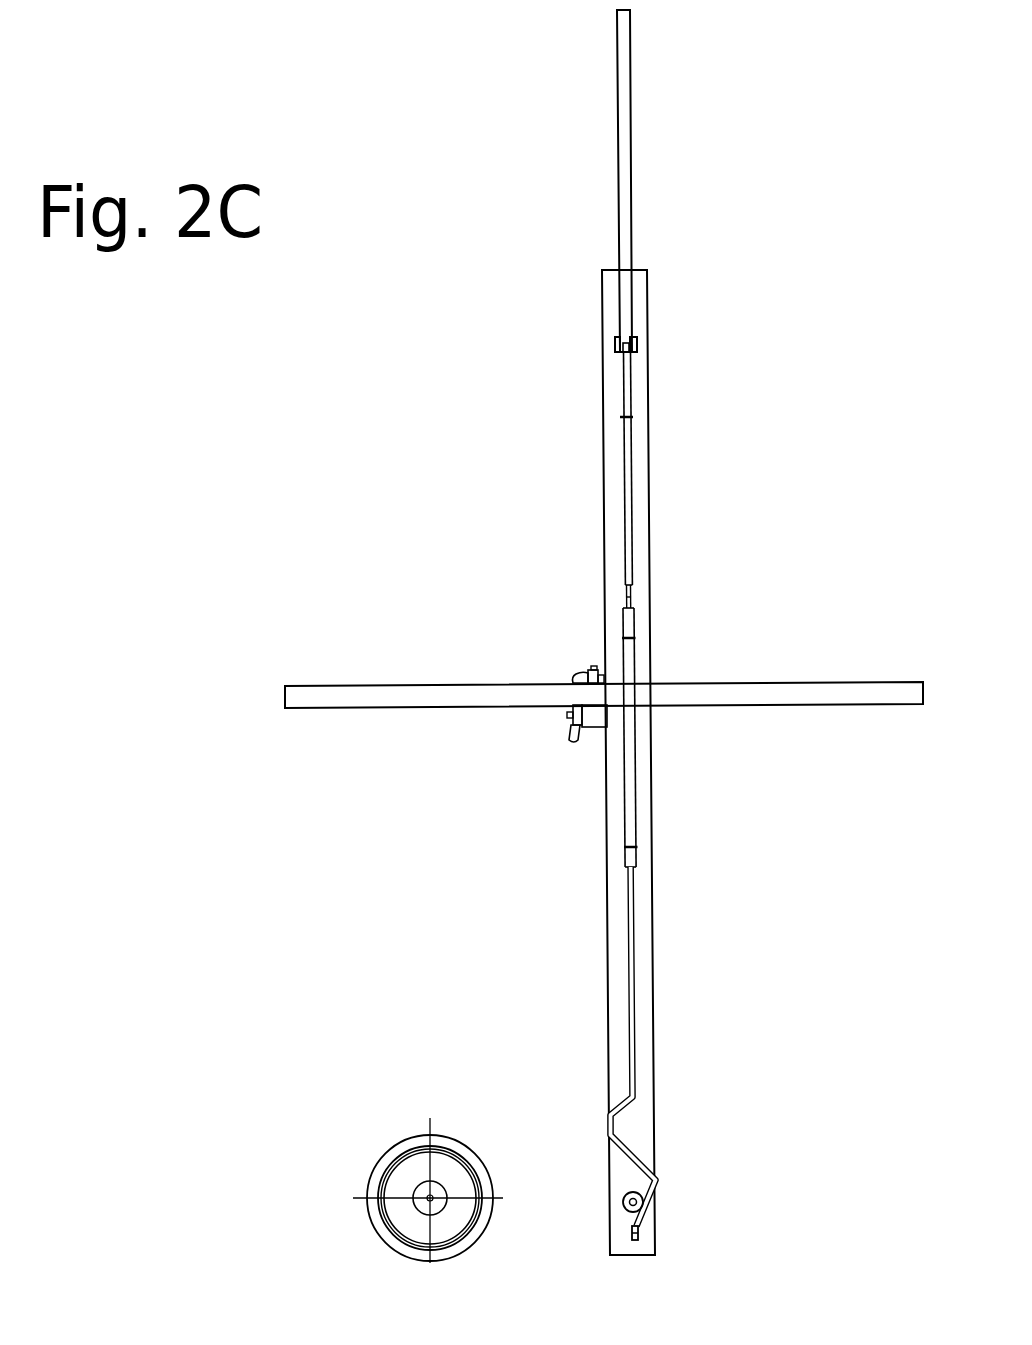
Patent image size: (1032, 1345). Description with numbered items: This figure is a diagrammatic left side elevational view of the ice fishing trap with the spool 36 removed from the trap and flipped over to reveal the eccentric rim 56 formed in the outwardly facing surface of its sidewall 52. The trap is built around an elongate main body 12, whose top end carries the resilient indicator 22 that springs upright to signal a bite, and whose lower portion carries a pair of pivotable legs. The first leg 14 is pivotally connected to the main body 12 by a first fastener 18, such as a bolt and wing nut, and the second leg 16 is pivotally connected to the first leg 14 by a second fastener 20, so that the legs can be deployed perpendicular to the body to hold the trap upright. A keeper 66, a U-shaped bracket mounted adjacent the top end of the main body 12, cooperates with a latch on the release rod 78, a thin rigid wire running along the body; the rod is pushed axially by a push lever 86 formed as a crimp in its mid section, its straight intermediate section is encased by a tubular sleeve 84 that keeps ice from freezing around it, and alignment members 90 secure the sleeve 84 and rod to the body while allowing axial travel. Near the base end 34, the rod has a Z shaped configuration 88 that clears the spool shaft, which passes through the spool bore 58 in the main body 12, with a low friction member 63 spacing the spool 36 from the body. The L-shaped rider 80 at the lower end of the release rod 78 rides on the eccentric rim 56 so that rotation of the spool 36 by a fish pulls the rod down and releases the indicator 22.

The main body 12 is at (653, 783).
The resilient indicator 22 is at (630, 190).
The keeper 66 is at (637, 343).
The release rod 78 is at (634, 566).
The alignment members 90 is at (633, 417).
The push lever 86 is at (625, 588).
The tubular element or sleeve 84 is at (626, 857).
The Z shaped configuration 88 is at (612, 1140).
The spool bore 58 is at (645, 1199).
The low friction member 63 is at (622, 1195).
The rider 80 is at (630, 1237).
The base end 34 is at (650, 1238).
The second leg 16 is at (390, 686).
The second fastener 20 is at (577, 668).
The first fastener 18 is at (571, 729).
The first leg 14 is at (595, 727).
The spool 36 is at (443, 1136).
The sidewall 52 is at (392, 1152).
The eccentric rim 56 is at (381, 1186).